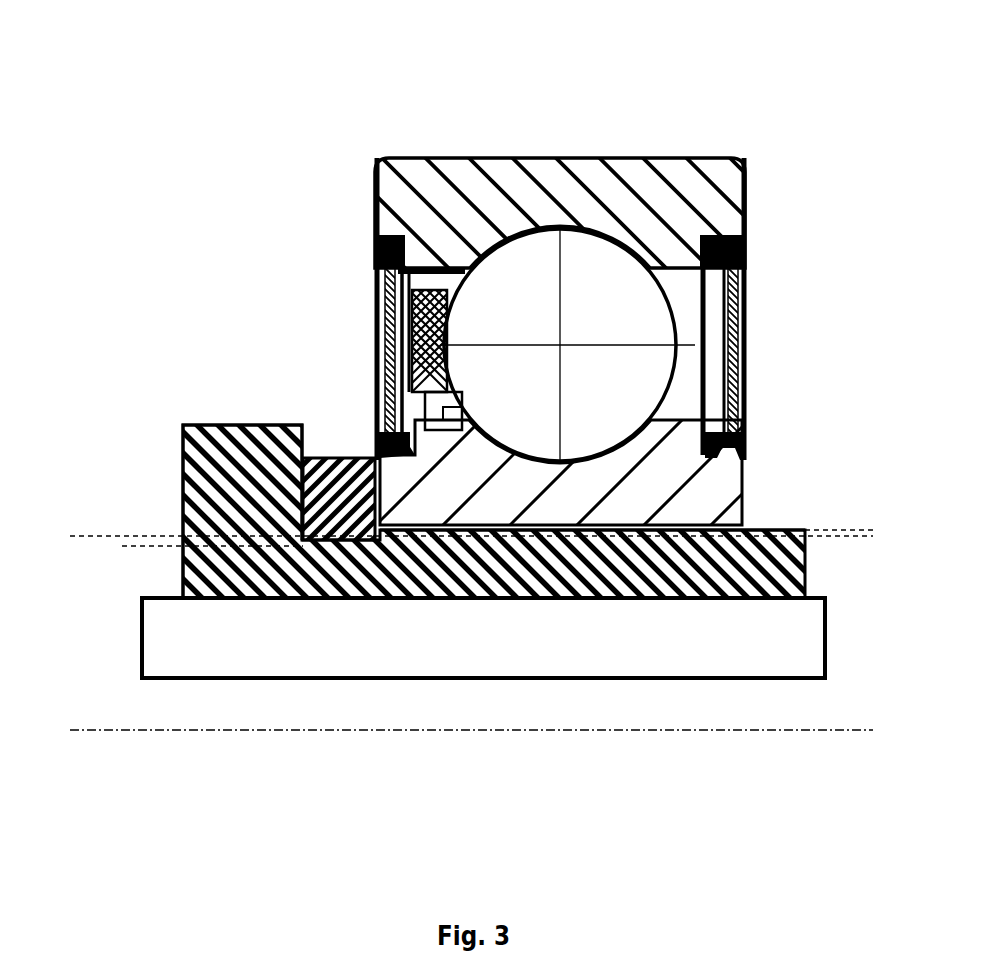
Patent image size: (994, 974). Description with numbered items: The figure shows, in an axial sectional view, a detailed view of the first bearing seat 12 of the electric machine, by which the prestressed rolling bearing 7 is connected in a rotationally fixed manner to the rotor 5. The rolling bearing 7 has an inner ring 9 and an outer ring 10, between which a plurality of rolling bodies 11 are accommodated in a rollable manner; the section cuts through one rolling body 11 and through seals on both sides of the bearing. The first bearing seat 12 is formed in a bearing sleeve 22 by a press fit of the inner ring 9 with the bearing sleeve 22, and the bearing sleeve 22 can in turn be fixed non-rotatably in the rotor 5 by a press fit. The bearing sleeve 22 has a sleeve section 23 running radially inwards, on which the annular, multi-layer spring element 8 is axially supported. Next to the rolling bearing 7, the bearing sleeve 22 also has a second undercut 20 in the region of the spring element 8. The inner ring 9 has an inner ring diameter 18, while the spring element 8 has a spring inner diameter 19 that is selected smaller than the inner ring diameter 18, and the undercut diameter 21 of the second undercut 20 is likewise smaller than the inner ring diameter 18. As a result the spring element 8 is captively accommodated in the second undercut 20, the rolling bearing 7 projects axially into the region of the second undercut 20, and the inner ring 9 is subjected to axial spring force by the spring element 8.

The rotor 5 is at (330, 657).
The rolling bearing 7 is at (486, 125).
The spring element 8 is at (340, 457).
The inner ring 9 is at (748, 472).
The outer ring 10 is at (480, 512).
The rolling bodies 11 is at (598, 294).
The first bearing seat 12 is at (375, 348).
The inner ring diameter 18 is at (863, 530).
The spring inner diameter 19 is at (80, 538).
The second undercut 20 is at (352, 562).
The undercut diameter 21 is at (132, 547).
The bearing sleeve 22 is at (500, 570).
The sleeve section 23 is at (208, 497).